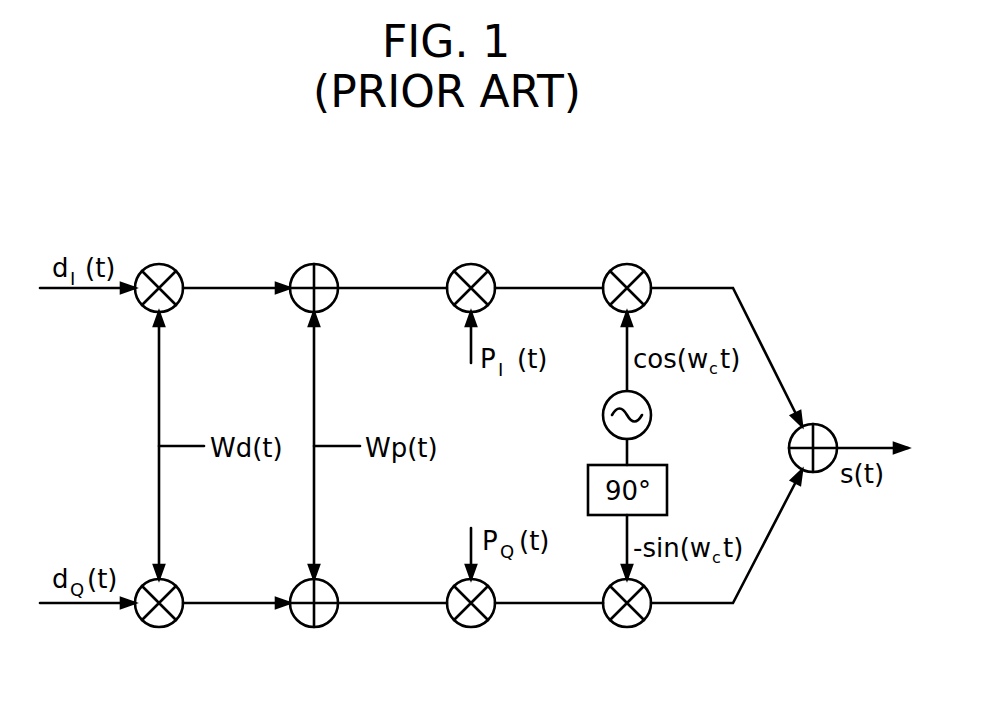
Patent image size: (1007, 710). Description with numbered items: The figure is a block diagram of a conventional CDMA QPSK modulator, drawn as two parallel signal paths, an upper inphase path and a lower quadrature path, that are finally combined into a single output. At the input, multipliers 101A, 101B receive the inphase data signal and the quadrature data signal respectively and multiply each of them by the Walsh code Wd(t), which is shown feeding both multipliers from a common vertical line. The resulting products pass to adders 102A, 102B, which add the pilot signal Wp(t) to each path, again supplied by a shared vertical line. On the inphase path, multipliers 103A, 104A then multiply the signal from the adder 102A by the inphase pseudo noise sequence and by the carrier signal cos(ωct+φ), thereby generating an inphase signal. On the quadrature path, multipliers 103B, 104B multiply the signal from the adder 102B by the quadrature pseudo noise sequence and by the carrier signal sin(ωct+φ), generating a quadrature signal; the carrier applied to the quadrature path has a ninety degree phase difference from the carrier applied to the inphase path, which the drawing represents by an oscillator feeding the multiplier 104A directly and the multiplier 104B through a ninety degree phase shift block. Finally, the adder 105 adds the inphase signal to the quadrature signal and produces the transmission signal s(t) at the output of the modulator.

The multiplier 101A is at (166, 266).
The multiplier 101B is at (173, 582).
The adder 102A is at (321, 266).
The adder 102B is at (328, 582).
The multiplier 103A is at (478, 266).
The multiplier 103B is at (477, 625).
The multiplier 104A is at (634, 266).
The multiplier 104B is at (633, 625).
The adder 105 is at (820, 426).